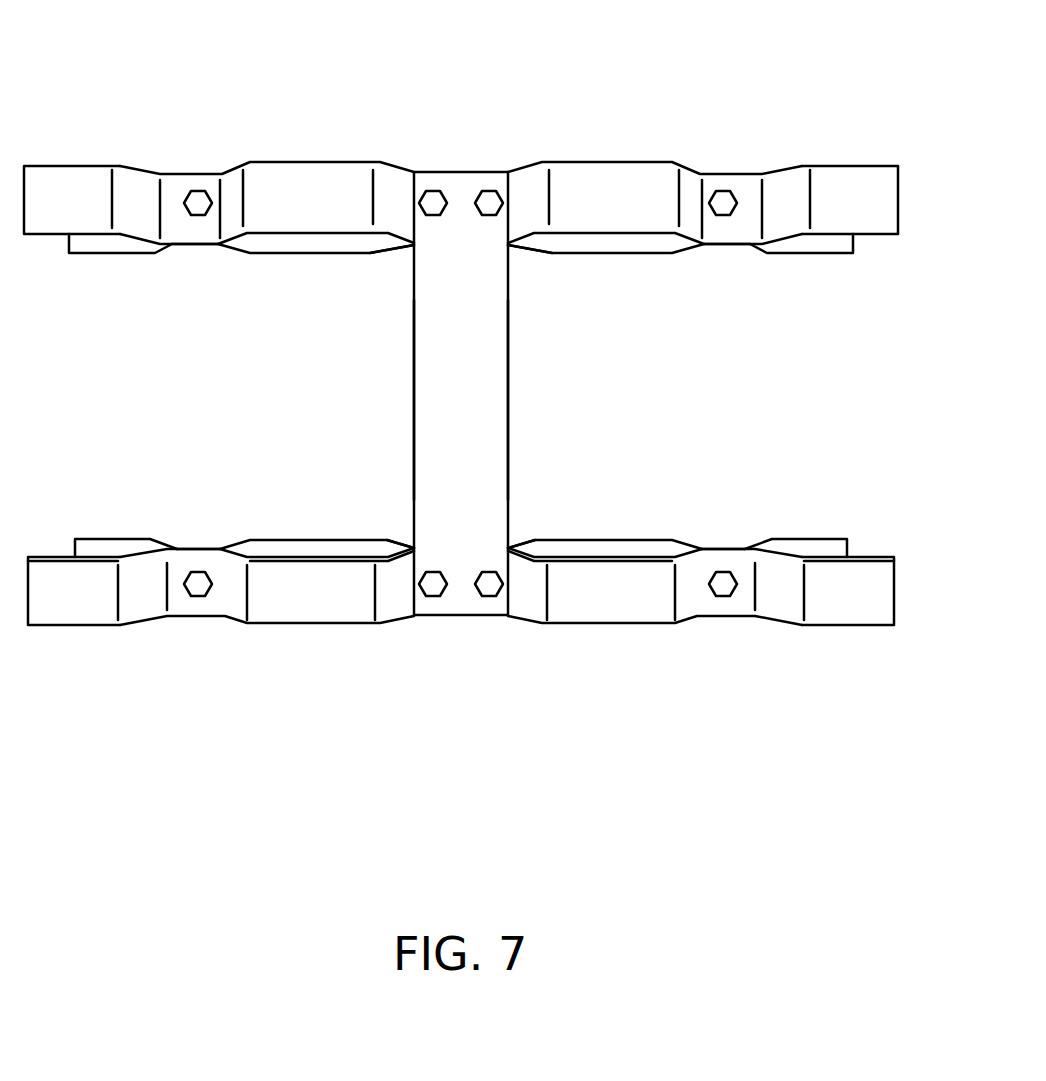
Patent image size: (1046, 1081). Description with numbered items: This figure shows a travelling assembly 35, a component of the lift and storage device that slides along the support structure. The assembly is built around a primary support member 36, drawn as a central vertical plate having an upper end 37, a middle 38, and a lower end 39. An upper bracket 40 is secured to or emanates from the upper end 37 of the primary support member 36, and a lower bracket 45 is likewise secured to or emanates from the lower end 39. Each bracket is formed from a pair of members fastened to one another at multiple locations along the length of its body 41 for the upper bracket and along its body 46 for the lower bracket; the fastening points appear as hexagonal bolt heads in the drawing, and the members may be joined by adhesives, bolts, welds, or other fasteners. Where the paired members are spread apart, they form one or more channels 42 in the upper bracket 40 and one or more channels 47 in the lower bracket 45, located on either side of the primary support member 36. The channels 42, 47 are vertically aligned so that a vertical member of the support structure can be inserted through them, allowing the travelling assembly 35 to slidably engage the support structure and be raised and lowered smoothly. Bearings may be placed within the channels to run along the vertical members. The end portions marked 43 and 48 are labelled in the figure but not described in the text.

The travelling assembly 35 is at (435, 343).
The primary support member 36 is at (478, 440).
The upper end 37 is at (470, 245).
The middle 38 is at (488, 397).
The lower end 39 is at (473, 540).
The upper bracket 40 is at (390, 185).
The body 41 is at (527, 195).
The channels 42 is at (307, 162).
The upper bracket end portion 43 is at (78, 192).
The lower bracket 45 is at (393, 588).
The body 46 is at (525, 598).
The channels 47 is at (313, 540).
The lower bracket end portion 48 is at (92, 595).